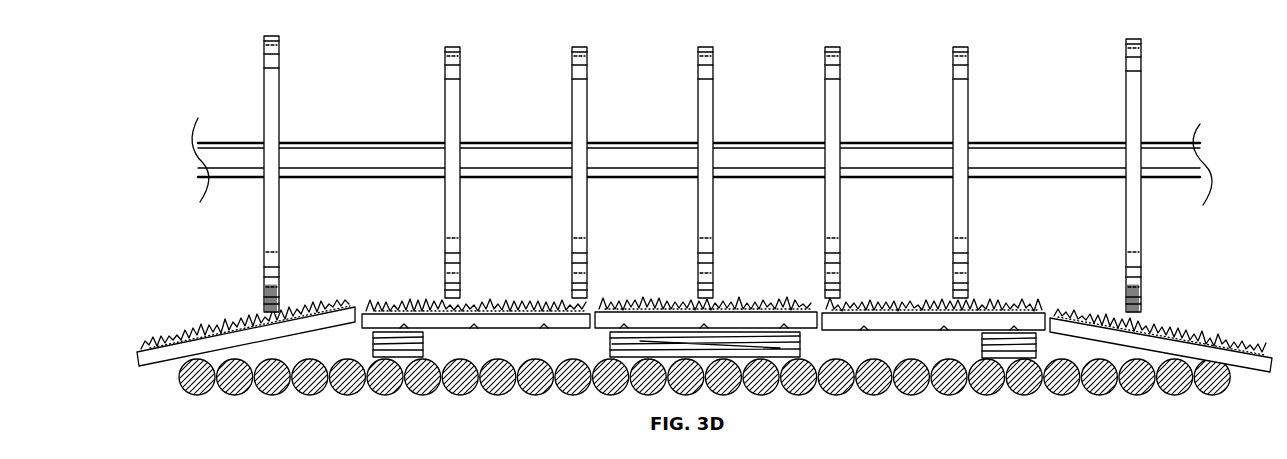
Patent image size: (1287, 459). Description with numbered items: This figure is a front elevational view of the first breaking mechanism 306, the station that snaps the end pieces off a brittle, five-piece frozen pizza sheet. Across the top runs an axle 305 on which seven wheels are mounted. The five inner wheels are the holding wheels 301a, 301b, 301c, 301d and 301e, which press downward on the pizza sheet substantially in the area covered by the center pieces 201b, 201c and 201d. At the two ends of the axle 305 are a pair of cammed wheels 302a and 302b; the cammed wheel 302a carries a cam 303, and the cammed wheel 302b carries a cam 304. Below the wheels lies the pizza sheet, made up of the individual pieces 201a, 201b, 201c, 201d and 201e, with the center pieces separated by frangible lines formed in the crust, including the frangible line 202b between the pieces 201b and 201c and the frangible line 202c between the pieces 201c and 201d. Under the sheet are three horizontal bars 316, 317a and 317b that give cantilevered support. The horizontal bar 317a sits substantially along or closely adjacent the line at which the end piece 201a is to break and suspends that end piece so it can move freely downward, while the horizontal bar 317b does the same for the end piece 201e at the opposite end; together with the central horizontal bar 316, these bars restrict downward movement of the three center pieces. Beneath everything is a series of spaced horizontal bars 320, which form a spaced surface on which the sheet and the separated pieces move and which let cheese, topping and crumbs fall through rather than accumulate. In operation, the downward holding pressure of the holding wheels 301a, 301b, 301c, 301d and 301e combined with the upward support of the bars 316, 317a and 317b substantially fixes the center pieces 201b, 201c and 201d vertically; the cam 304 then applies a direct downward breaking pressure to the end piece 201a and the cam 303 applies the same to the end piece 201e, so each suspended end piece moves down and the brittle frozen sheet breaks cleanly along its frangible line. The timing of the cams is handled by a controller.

The first breaking mechanism 306 is at (676, 174).
The axle 305 is at (233, 178).
The cammed wheel 302a is at (273, 75).
The cammed wheel 302b is at (1133, 88).
The holding wheel 301a is at (960, 97).
The holding wheel 301b is at (832, 97).
The holding wheel 301c is at (705, 97).
The holding wheel 301d is at (578, 97).
The holding wheel 301e is at (455, 92).
The cam 303 is at (265, 290).
The cam 304 is at (1124, 290).
The end piece 201a is at (1190, 326).
The piece 201b is at (890, 300).
The piece 201c is at (732, 300).
The piece 201d is at (495, 300).
The end piece 201e is at (315, 305).
The frangible line 202b is at (817, 323).
The frangible line 202c is at (588, 330).
The horizontal bar 316 is at (627, 353).
The horizontal bar 317a is at (1023, 356).
The horizontal bar 317b is at (397, 356).
The spaced horizontal bars 320 is at (197, 394).